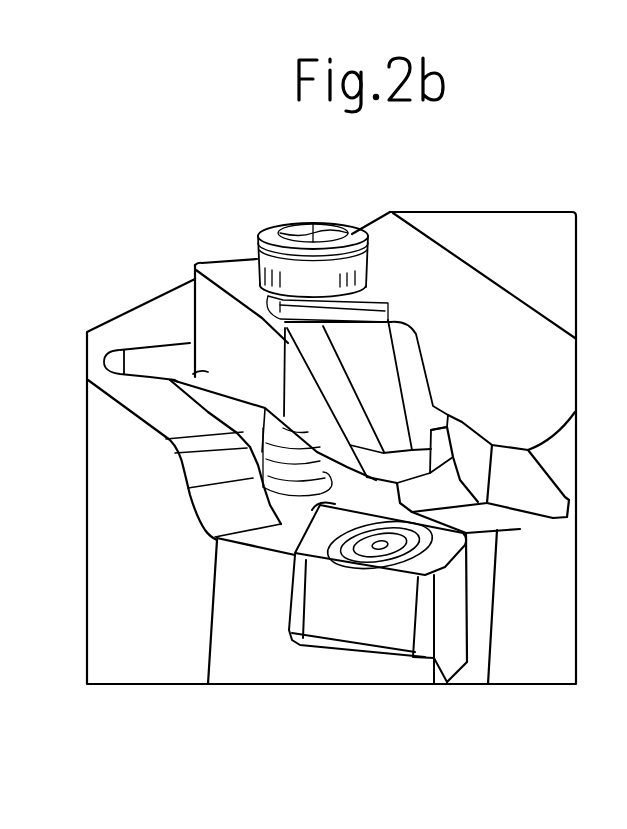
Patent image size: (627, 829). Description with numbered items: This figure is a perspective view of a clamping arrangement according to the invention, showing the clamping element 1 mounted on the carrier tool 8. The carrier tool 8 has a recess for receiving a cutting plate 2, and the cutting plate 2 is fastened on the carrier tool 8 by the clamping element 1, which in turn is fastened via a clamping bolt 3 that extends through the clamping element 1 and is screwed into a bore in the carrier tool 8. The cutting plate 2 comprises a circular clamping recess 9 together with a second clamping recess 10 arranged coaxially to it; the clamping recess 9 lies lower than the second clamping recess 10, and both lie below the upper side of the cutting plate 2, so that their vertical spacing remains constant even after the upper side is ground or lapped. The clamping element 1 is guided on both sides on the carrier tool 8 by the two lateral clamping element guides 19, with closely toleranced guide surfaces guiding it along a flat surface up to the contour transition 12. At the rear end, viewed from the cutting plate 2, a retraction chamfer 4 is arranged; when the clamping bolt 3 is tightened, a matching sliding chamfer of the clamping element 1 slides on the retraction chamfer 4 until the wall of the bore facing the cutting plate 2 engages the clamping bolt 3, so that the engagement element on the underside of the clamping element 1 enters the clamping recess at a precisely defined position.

The clamping element 1 is at (380, 368).
The cutting plate 2 is at (328, 625).
The clamping bolt 3 is at (263, 240).
The retraction chamfer 4 is at (192, 369).
The carrier tool 8 is at (145, 617).
The clamping recess 9 is at (415, 533).
The second clamping recess 10 is at (383, 548).
The contour transition 12 is at (389, 304).
The lateral clamping element guides 19 is at (187, 409).